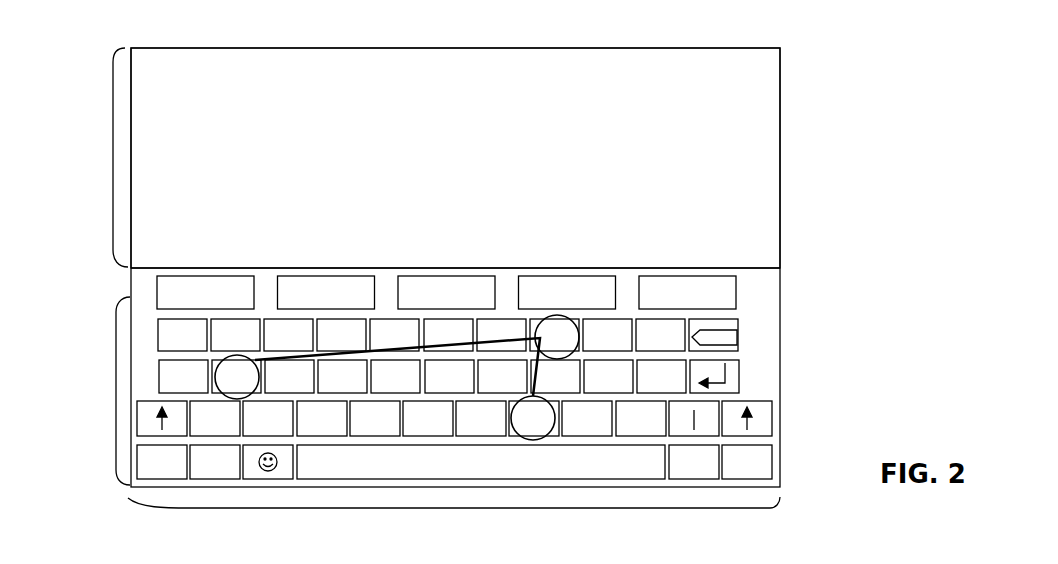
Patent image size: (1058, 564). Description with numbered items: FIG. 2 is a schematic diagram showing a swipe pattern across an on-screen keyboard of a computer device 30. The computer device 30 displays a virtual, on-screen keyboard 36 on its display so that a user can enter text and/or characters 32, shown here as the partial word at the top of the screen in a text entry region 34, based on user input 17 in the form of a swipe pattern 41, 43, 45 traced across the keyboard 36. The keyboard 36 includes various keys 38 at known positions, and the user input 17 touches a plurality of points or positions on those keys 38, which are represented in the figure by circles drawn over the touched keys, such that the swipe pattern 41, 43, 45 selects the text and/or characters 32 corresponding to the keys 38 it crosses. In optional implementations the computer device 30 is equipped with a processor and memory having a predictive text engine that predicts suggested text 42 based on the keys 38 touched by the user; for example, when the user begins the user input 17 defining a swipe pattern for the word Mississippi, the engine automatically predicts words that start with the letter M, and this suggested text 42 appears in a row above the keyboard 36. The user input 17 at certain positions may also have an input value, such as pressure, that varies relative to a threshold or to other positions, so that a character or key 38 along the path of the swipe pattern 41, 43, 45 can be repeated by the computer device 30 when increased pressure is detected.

The computer device 30 is at (804, 72).
The text and/or characters 32 is at (175, 65).
The text entry area 34 is at (113, 157).
The virtual on-screen keyboard 36 is at (116, 387).
The keys 38 is at (455, 511).
The swipe pattern 41 is at (556, 418).
The suggested text 42 is at (790, 270).
The swipe pattern 43 is at (575, 352).
The swipe pattern 45 is at (218, 367).
The user input 17 is at (536, 386).